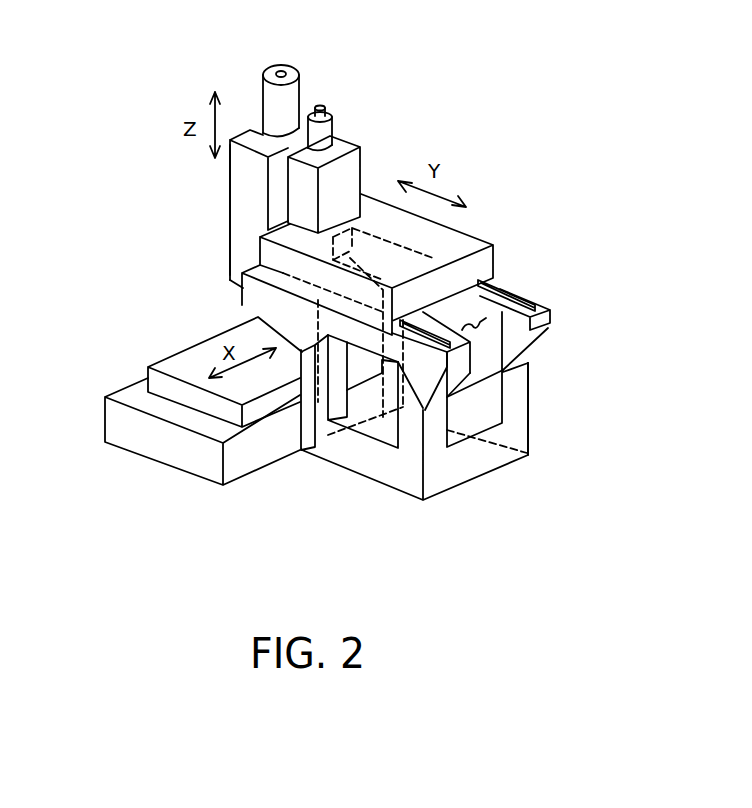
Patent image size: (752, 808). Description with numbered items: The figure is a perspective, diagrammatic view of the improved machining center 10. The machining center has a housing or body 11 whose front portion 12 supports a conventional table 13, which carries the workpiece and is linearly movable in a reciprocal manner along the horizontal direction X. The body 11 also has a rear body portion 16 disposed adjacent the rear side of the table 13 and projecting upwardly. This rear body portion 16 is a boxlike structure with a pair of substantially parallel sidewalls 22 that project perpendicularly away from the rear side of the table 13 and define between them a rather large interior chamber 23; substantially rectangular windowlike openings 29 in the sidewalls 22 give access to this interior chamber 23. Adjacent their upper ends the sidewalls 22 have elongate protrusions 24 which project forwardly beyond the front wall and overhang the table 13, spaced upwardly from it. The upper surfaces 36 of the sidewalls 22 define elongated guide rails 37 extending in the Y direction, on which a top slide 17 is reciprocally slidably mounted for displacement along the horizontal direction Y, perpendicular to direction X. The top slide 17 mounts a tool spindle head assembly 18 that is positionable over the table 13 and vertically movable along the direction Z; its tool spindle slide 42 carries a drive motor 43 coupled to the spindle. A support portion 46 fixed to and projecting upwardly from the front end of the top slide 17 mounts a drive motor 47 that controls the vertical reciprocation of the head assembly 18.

The machining center 10 is at (118, 213).
The body 11 is at (410, 510).
The front portion 12 is at (180, 455).
The table 13 is at (173, 365).
The rear body portion 16 is at (473, 465).
The top slide 17 is at (462, 238).
The tool spindle head assembly 18 is at (219, 186).
The sidewalls 22 is at (512, 300).
The interior chamber 23 is at (375, 407).
The protrusions 24 is at (255, 315).
The windowlike openings 29 is at (360, 427).
The upper surfaces 36 is at (465, 342).
The guide rails 37 is at (500, 290).
The tool spindle slide 42 is at (245, 230).
The drive motor 43 is at (290, 98).
The support portion 46 is at (350, 168).
The drive motor 47 is at (327, 122).